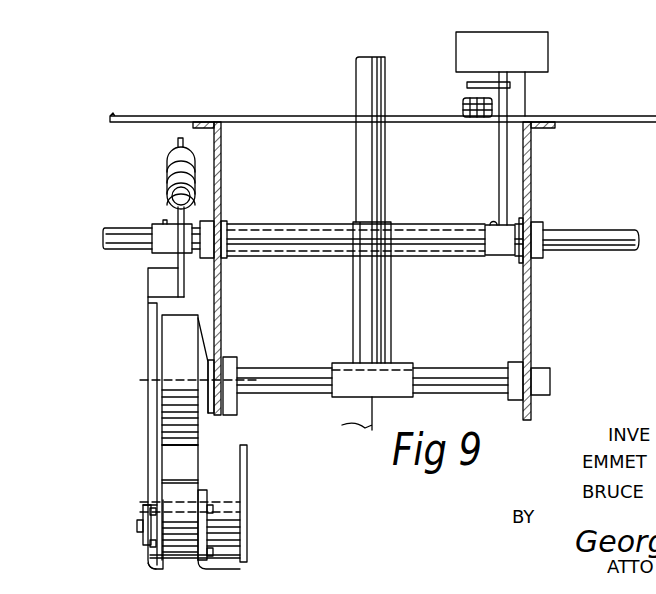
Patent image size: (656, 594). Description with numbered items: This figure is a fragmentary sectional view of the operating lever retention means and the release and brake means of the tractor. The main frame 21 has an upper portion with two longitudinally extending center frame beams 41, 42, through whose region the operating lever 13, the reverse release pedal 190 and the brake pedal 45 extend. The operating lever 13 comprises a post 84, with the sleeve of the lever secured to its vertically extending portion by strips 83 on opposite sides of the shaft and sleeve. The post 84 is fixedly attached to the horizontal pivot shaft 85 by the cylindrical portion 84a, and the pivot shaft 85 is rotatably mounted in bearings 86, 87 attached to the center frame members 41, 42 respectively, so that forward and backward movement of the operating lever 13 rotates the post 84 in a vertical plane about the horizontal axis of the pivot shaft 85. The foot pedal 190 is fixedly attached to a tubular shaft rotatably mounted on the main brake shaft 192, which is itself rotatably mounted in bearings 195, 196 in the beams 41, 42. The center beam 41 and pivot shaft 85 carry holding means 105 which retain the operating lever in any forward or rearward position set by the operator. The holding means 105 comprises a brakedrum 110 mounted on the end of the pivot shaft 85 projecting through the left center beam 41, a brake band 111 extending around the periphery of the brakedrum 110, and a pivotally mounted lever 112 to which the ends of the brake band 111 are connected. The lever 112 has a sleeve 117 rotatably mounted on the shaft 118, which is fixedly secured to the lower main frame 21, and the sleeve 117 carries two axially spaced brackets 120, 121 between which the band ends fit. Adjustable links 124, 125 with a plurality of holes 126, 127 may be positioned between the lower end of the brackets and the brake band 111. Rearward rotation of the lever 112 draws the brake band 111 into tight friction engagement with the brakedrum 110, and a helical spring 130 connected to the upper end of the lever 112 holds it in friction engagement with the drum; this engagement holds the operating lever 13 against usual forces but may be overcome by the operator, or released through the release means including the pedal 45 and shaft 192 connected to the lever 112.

The operating lever 13 is at (383, 57).
The brake pedal 45 is at (540, 48).
The center frame beam 41 is at (222, 154).
The center frame beam 42 is at (531, 166).
The helical spring 130 is at (167, 164).
The reverse release pedal 190 is at (272, 224).
The brake shaft 192 is at (556, 228).
The bearing 195 is at (206, 258).
The bearing 196 is at (543, 259).
The post 84 is at (378, 222).
The strips 83 is at (353, 293).
The lever 112 is at (150, 285).
The holding means 105 is at (98, 359).
The brakedrum 110 is at (172, 372).
The bearing 86 is at (238, 398).
The pivot shaft 85 is at (300, 368).
The cylindrical portion 84a is at (400, 397).
The bearing 87 is at (520, 356).
The brake band 111 is at (172, 458).
The main frame 21 is at (247, 463).
The sleeve 117 is at (148, 505).
The shaft 118 is at (140, 512).
The adjustable link 124 is at (137, 527).
The holes 126 is at (151, 543).
The bracket 120 is at (156, 569).
The holes 127 is at (212, 518).
The adjustable link 125 is at (215, 548).
The bracket 121 is at (206, 569).